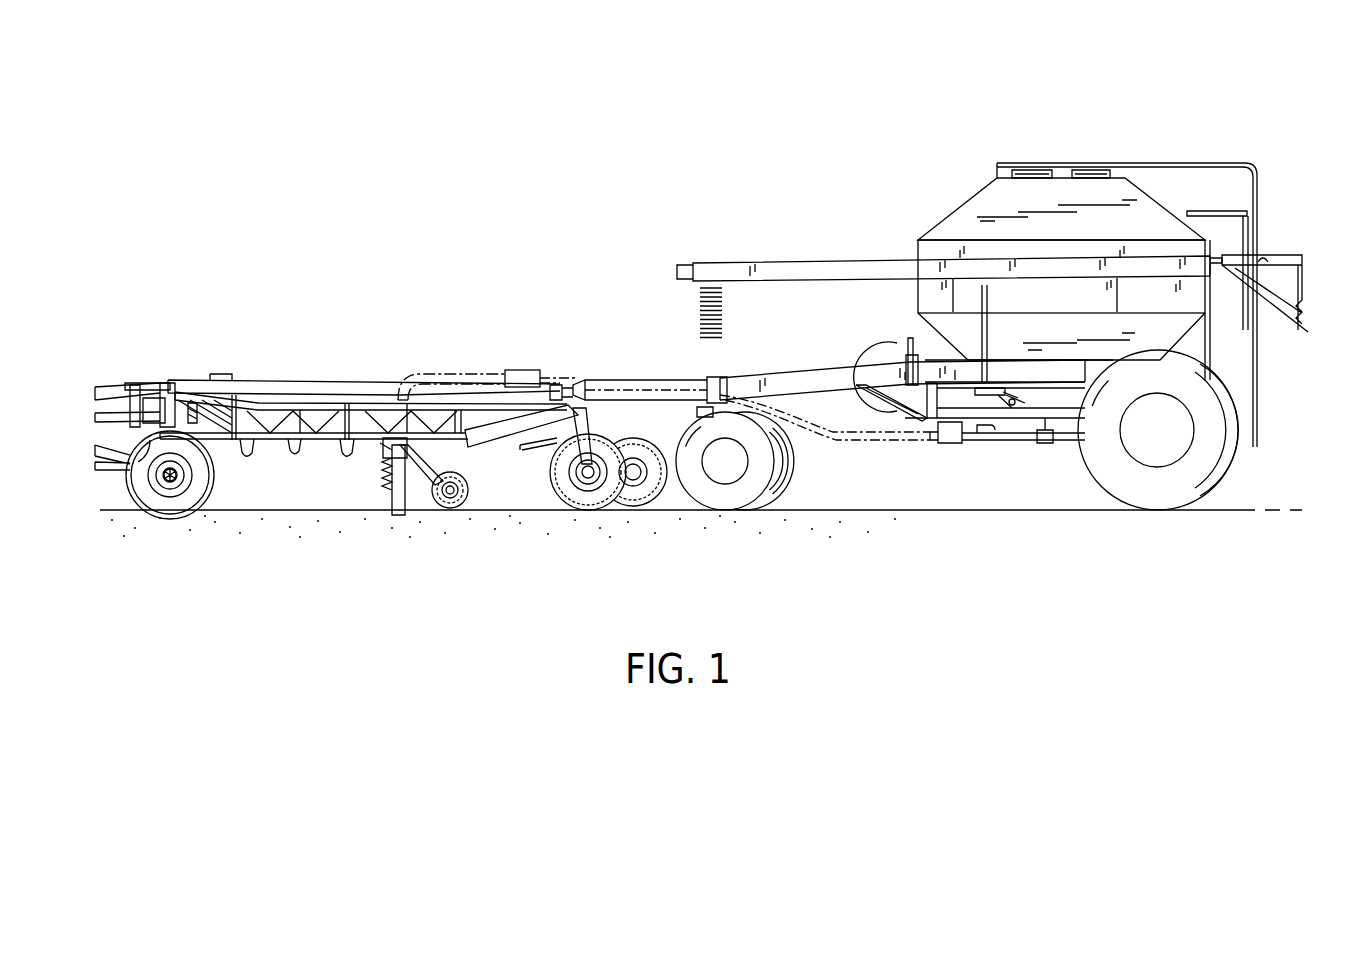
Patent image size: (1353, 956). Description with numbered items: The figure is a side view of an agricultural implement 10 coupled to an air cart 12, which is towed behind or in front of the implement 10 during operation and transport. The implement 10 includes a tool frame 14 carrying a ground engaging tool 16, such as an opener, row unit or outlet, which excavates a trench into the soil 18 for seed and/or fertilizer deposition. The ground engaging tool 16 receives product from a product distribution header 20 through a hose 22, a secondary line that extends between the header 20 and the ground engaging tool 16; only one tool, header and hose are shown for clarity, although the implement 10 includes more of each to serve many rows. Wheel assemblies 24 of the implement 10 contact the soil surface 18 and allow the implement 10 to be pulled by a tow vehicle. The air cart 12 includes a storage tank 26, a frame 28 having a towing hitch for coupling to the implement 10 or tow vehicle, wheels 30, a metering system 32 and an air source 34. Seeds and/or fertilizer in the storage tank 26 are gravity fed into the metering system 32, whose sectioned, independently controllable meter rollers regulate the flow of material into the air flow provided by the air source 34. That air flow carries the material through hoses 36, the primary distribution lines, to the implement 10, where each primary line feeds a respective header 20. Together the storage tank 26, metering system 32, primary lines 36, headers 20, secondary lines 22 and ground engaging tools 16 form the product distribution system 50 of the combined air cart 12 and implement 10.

The implement 10 is at (298, 360).
The air cart 12 is at (962, 126).
The tool frame 14 is at (386, 404).
The ground engaging tool 16 is at (393, 507).
The soil 18 is at (913, 510).
The product distribution header 20 is at (528, 368).
The hose 22 is at (448, 372).
The wheel assembly 24 is at (170, 513).
The storage tank 26 is at (985, 200).
The frame 28 is at (797, 370).
The wheels 30 is at (797, 472).
The metering system 32 is at (1018, 402).
The air source 34 is at (866, 347).
The hoses 36 is at (848, 445).
The product distribution system 50 is at (626, 339).